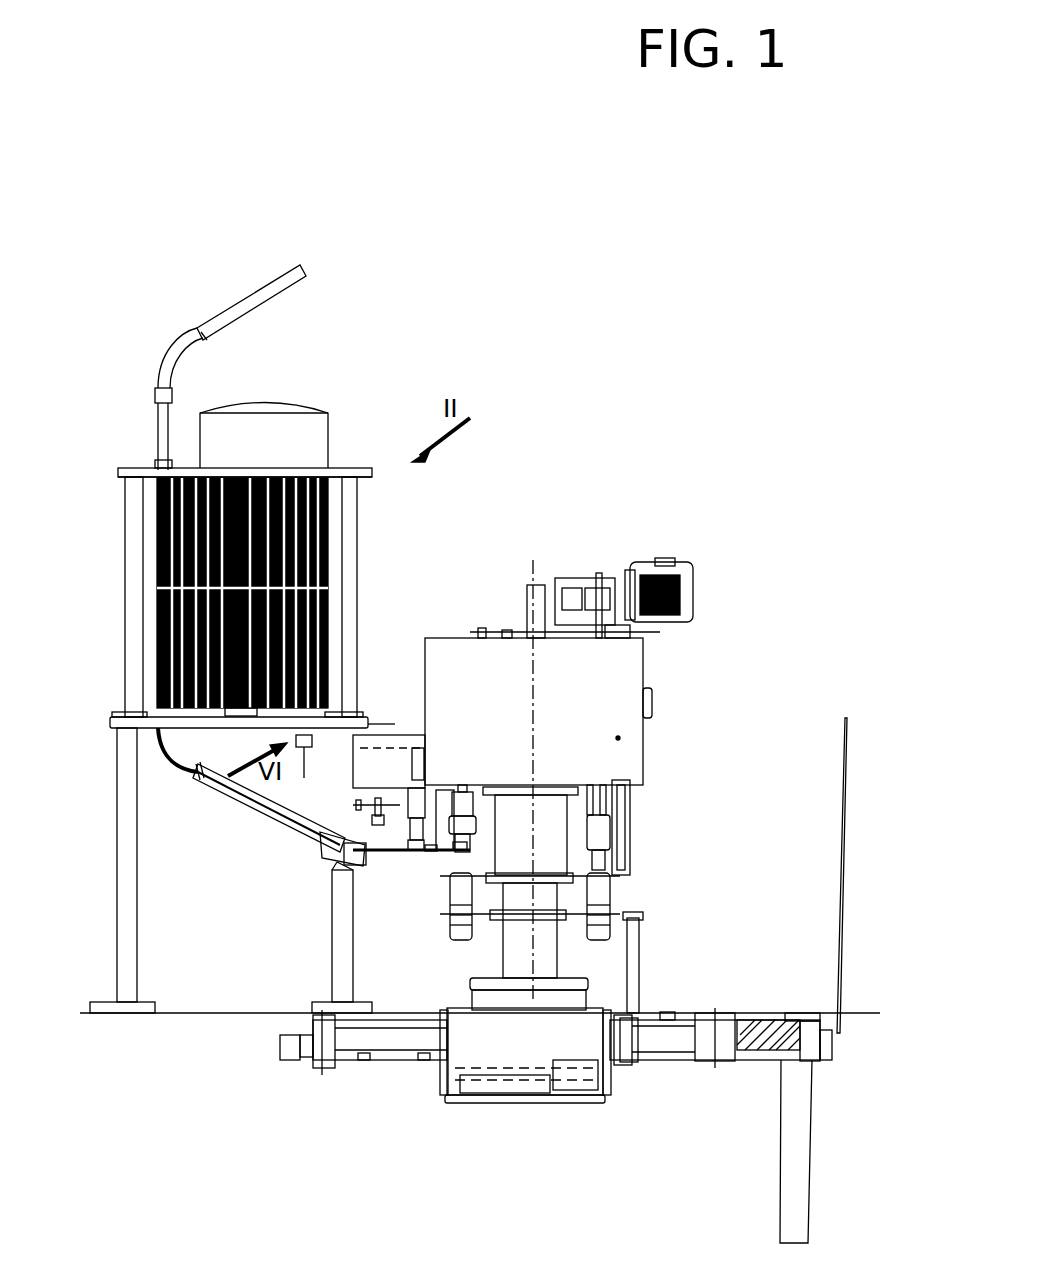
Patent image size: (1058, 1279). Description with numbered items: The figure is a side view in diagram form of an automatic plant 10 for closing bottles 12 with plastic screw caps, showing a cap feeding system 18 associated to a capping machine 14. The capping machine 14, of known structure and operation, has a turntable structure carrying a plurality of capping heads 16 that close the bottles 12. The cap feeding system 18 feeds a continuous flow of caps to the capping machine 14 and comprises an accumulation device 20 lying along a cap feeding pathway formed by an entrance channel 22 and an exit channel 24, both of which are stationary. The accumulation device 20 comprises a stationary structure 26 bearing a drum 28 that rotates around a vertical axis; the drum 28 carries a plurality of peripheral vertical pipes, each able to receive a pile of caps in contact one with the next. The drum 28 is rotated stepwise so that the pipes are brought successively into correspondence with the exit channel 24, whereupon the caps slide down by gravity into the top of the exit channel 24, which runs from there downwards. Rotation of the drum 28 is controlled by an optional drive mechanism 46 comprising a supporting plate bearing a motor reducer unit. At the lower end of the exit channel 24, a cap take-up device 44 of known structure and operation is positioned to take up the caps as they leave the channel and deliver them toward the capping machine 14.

The automatic plant 10 is at (478, 282).
The bottles 12 is at (610, 895).
The capping machine 14 is at (669, 694).
The capping heads 16 is at (470, 790).
The cap feeding system 18 is at (384, 382).
The accumulation device 20 is at (340, 319).
The entrance channel 22 is at (165, 358).
The exit channel 24 is at (264, 818).
The stationary structure 26 is at (357, 638).
The drum 28 is at (336, 582).
The cap take-up device 44 is at (400, 855).
The drive mechanism 46 is at (328, 404).